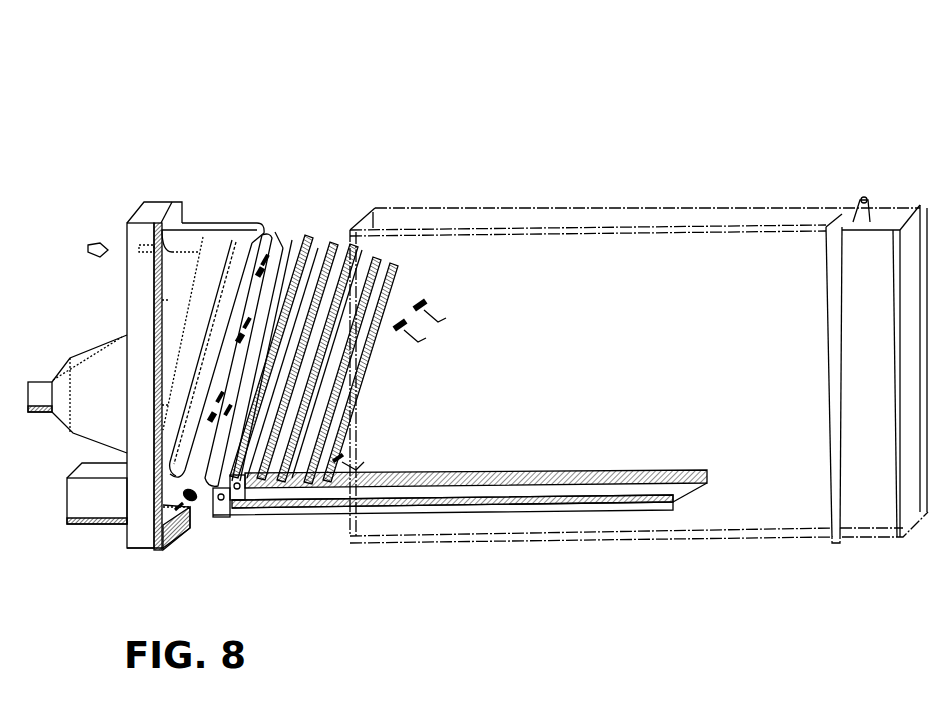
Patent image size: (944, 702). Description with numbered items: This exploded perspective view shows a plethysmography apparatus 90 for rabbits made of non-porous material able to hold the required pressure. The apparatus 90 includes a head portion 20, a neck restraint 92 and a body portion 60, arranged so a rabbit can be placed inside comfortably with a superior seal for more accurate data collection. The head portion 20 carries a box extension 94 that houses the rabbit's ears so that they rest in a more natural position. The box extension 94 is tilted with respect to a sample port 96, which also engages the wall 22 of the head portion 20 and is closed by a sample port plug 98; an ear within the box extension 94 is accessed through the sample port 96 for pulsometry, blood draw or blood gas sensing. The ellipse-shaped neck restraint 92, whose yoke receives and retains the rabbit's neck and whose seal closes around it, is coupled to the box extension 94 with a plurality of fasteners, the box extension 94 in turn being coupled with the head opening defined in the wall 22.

The head portion 20 is at (159, 192).
The wall 22 is at (130, 222).
The body portion 60 is at (655, 290).
The plethysmography apparatus 90 is at (645, 88).
The neck restraint 92 is at (405, 287).
The box extension 94 is at (220, 243).
The sample port 96 is at (187, 240).
The sample port plug 98 is at (97, 257).